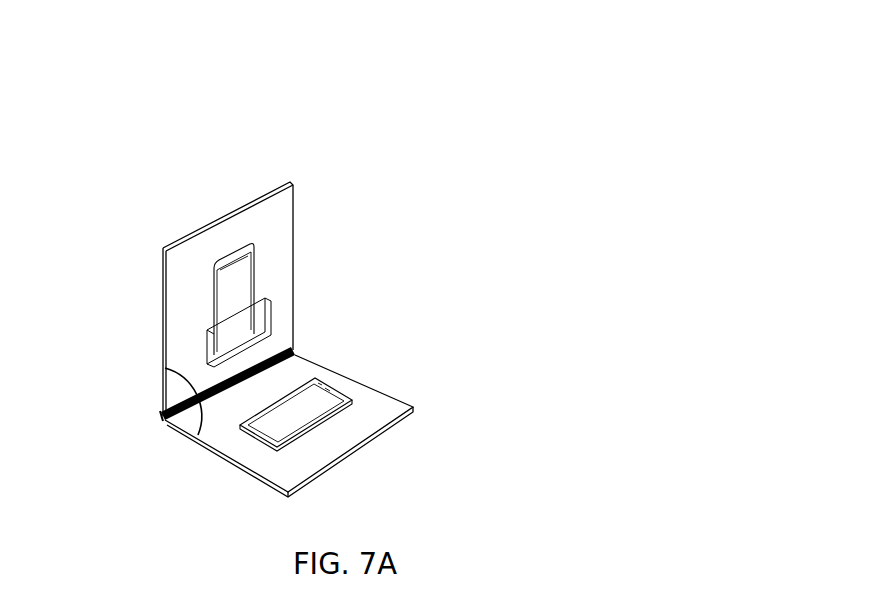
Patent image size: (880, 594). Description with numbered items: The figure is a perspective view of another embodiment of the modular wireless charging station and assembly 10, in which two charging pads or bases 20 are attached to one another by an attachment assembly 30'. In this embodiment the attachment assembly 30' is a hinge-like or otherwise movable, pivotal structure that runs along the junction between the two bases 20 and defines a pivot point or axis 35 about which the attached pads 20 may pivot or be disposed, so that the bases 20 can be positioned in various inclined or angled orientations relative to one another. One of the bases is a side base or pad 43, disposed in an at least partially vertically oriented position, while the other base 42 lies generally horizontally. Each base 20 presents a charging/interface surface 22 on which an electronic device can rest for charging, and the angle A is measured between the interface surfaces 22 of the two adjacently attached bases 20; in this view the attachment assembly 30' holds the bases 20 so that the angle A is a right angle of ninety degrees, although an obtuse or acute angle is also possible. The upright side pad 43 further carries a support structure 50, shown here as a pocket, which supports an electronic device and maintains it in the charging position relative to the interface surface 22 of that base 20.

The wireless charging station and assembly 10 is at (427, 86).
The charging pad or base 20 is at (349, 339).
The side base or pad 43 is at (293, 208).
The base panel 42 is at (378, 392).
The interface surface 22 is at (195, 258).
The attachment assembly 30' is at (284, 347).
The pivot point or axis 35 is at (152, 424).
The angle A is at (196, 412).
The support structure 50 is at (208, 341).